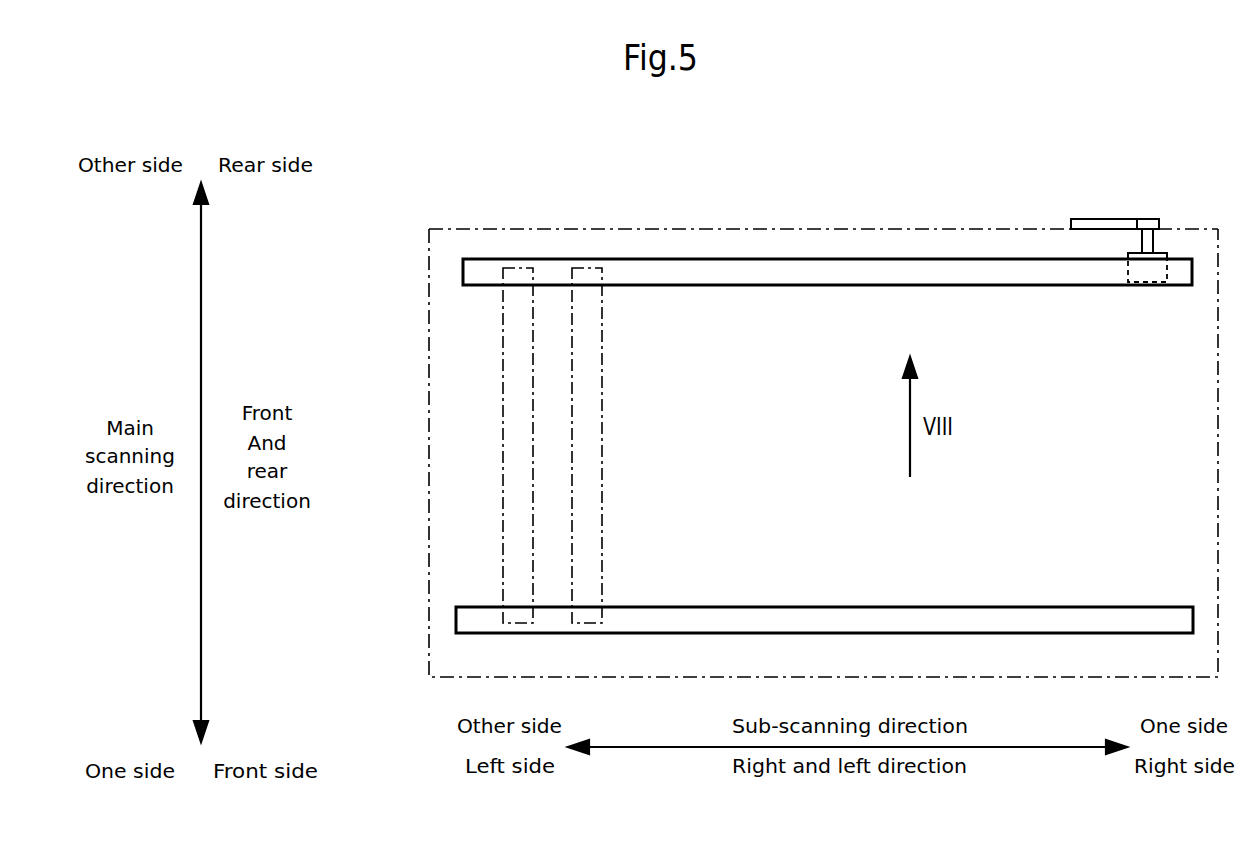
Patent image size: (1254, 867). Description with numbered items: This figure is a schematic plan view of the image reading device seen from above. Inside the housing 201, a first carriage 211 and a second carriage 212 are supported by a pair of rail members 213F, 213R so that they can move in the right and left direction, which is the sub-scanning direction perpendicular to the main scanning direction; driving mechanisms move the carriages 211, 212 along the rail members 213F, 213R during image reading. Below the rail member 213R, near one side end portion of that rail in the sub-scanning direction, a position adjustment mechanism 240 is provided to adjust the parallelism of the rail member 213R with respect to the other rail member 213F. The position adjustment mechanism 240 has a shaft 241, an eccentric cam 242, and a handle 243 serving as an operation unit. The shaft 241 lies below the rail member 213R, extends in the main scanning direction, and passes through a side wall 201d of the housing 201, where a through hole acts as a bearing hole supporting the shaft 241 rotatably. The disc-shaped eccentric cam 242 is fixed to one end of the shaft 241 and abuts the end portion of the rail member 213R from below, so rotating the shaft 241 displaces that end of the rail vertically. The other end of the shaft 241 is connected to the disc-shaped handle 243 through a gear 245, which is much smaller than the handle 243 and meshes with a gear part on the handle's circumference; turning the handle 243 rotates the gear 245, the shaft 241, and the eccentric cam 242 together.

The housing 201 is at (428, 340).
The side wall 201d is at (518, 229).
The first carriage 211 is at (602, 485).
The second carriage 212 is at (503, 437).
The rail member 213R is at (740, 272).
The rail member 213F is at (705, 615).
The position adjustment mechanism 240 is at (1123, 261).
The shaft 241 is at (1142, 240).
The eccentric cam 242 is at (1128, 272).
The handle 243 is at (1108, 219).
The gear 245 is at (1150, 219).